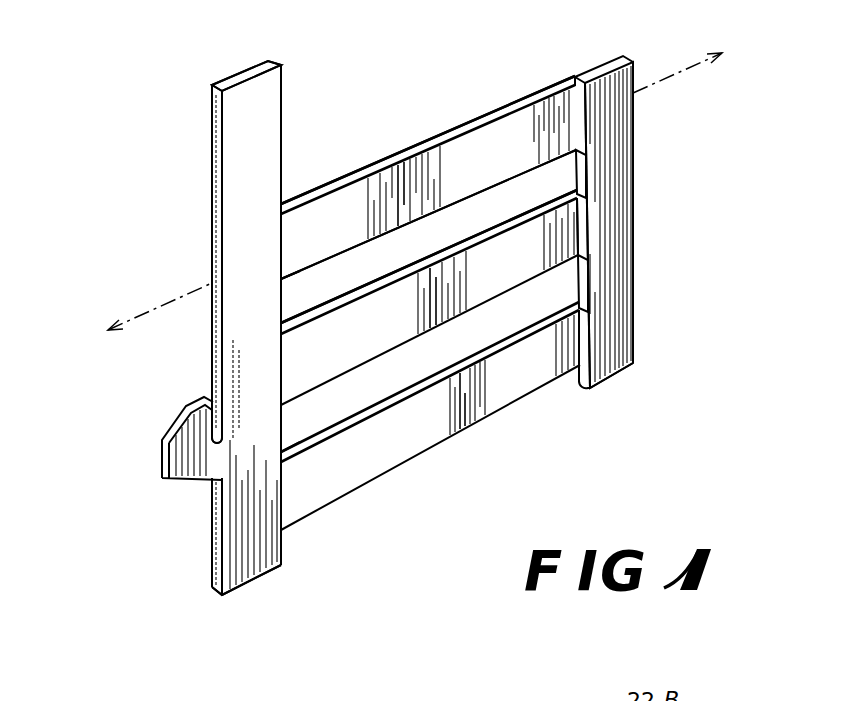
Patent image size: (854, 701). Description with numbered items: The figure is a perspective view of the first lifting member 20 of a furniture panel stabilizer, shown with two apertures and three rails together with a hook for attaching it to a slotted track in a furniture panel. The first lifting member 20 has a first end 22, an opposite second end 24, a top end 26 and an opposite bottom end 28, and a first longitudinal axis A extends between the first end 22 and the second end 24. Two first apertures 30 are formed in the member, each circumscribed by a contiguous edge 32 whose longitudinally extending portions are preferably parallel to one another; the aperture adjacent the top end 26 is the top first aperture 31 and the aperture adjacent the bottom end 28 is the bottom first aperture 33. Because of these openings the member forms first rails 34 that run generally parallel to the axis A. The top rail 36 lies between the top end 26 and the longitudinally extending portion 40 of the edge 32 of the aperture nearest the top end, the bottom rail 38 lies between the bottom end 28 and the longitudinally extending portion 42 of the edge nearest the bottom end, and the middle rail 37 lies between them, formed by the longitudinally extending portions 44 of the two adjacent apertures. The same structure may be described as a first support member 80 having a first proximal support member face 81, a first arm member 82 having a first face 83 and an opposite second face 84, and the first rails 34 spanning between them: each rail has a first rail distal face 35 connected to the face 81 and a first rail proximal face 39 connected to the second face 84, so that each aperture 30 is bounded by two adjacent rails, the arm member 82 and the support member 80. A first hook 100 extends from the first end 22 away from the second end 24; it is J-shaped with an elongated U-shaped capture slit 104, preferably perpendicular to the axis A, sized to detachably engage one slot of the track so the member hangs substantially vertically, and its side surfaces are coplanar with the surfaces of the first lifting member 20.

The first lifting member 20 is at (238, 588).
The first end 22 is at (212, 190).
The second end 24 is at (636, 186).
The top end 26 is at (232, 76).
The bottom end 28 is at (598, 387).
The first aperture 30 is at (478, 213).
The top first aperture 31 is at (308, 284).
The contiguous edge 32 is at (474, 200).
The bottom first aperture 33 is at (292, 432).
The first rail 34 is at (317, 350).
The first rail distal face 35 is at (590, 343).
The top rail 36 is at (420, 160).
The middle rail 37 is at (397, 317).
The bottom rail 38 is at (388, 452).
The first rail proximal face 39 is at (278, 355).
The longitudinally extending portion 40 is at (535, 180).
The longitudinally extending portion 42 is at (489, 346).
The longitudinally extending portion 44 is at (473, 246).
The first support member 80 is at (608, 357).
The first proximal support member face 81 is at (579, 270).
The first arm member 82 is at (257, 558).
The first face 83 is at (213, 549).
The second face 84 is at (283, 85).
The first hook 100 is at (160, 447).
The capture slit 104 is at (212, 407).
The first longitudinal axis A is at (700, 44).